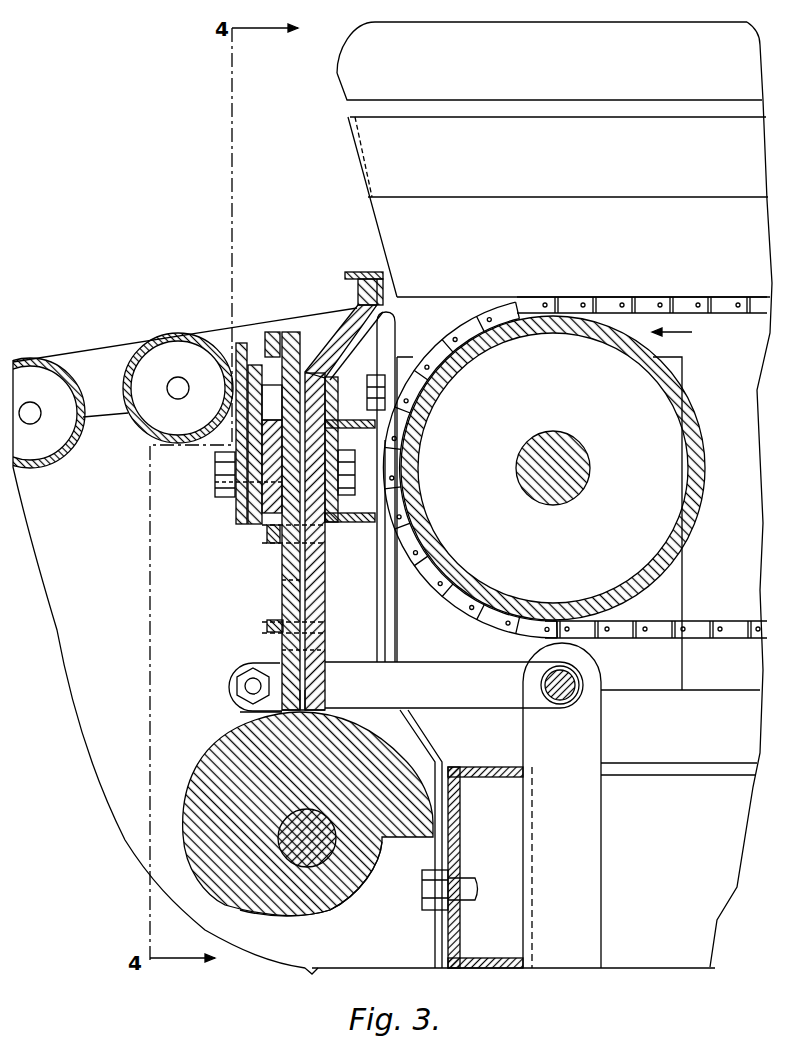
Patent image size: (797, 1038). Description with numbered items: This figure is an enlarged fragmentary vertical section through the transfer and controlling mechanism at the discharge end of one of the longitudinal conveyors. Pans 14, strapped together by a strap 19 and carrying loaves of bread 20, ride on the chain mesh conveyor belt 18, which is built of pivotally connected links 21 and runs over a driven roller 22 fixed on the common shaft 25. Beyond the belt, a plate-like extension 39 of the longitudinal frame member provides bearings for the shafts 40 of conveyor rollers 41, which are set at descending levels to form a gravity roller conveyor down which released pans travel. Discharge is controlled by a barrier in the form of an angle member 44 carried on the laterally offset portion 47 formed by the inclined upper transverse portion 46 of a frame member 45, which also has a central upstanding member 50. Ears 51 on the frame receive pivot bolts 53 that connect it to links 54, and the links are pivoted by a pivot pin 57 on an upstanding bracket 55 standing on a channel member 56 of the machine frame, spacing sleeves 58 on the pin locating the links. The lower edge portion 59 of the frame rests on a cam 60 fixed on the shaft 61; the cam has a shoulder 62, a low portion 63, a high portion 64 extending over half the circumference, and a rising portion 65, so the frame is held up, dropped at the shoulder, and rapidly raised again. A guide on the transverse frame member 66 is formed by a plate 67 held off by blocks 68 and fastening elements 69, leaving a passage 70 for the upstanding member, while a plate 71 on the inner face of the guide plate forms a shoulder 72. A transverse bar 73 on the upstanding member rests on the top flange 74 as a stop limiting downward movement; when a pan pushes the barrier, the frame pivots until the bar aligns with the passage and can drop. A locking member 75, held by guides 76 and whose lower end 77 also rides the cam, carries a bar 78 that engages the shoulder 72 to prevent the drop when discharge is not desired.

The pan 14 is at (413, 213).
The conveyor belt 18 is at (720, 316).
The strap 19 is at (408, 143).
The loaves of bread 20 is at (340, 72).
The link 21 is at (683, 306).
The roller 22 is at (685, 409).
The common shaft 25 is at (573, 457).
The plate-like extension 39 is at (93, 707).
The shaft 40 is at (37, 408).
The conveyor roller 41 is at (43, 363).
The barrier 44 is at (362, 270).
The frame member 45 is at (325, 652).
The upper transverse portion 46 is at (342, 334).
The laterally offset portion 47 is at (358, 296).
The central upstanding member 50 is at (312, 572).
The ear 51 is at (257, 663).
The pivot member 53 is at (250, 713).
The link 54 is at (460, 683).
The upstanding bracket 55 is at (583, 747).
The channel member 56 is at (452, 838).
The pivot pin 57 is at (580, 679).
The spacing sleeve 58 is at (573, 663).
The lower edge portion 59 is at (330, 692).
The cam 60 is at (207, 827).
The shaft 61 is at (297, 860).
The shoulder 62 is at (410, 840).
The low portion 63 is at (375, 887).
The high portion 64 is at (207, 743).
The rising portion 65 is at (257, 914).
The transverse frame member 66 is at (413, 478).
The plate 67 is at (233, 493).
The block 68 is at (273, 545).
The fastening element 69 is at (400, 510).
The passage 70 is at (273, 477).
The plate 71 is at (253, 482).
The shoulder 72 is at (257, 350).
The transverse bar 73 is at (330, 375).
The top flange 74 is at (400, 442).
The locking member 75 is at (280, 580).
The guide 76 is at (287, 570).
The lower end 77 is at (283, 709).
The bar 78 is at (273, 333).